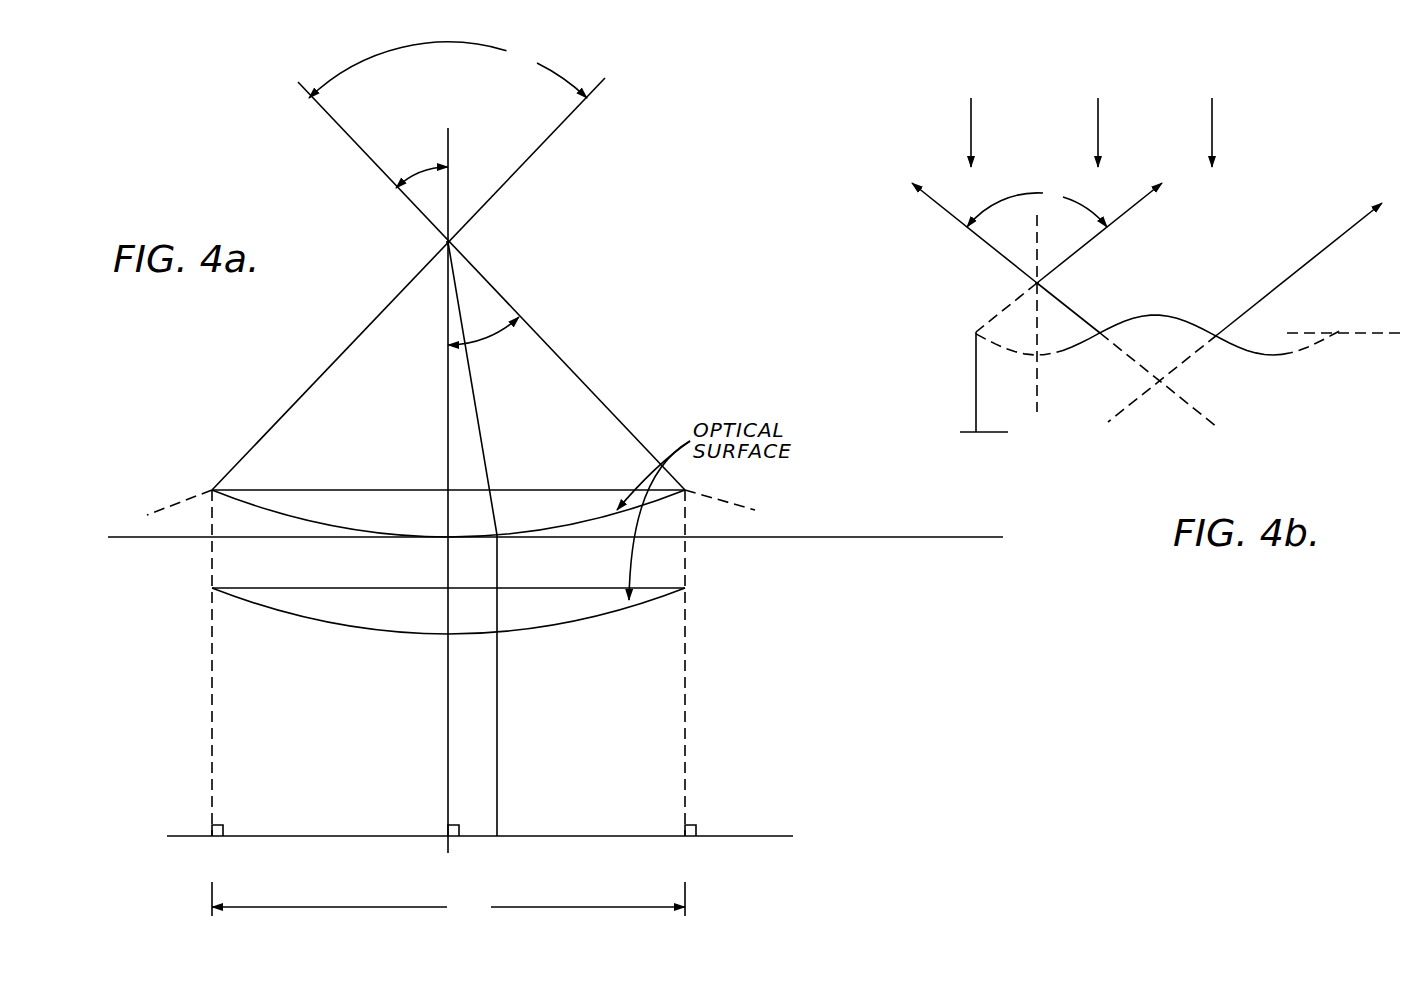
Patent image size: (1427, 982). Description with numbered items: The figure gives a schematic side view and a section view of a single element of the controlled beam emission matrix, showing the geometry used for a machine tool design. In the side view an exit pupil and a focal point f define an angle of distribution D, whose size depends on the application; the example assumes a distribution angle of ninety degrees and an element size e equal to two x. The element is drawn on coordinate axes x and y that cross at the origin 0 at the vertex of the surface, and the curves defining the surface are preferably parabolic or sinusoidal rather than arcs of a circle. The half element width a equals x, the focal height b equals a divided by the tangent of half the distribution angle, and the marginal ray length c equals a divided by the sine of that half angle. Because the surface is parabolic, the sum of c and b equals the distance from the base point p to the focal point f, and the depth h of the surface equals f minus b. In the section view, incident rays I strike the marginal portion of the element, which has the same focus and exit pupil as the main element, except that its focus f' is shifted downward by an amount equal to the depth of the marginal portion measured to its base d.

In FIG. 4A, the angle of distribution D is at (448, 70).
In FIG. 4B, the angle of distribution D is at (1037, 207).
In FIG. 4A, the y axis y is at (447, 474).
In FIG. 4A, the x axis x is at (564, 544).
In FIG. 4A, the origin 0 is at (458, 553).
In FIG. 4A, the focal point f is at (464, 241).
In FIG. 4B, the focal point f is at (1054, 283).
In FIG. 4B, the shifted focal point f' is at (1158, 380).
In FIG. 4A, the marginal ray length c is at (582, 384).
In FIG. 4B, the marginal ray length c is at (1000, 312).
In FIG. 4A, the focal height b is at (447, 430).
In FIG. 4A, the surface depth h is at (447, 513).
In FIG. 4B, the surface depth h is at (1037, 344).
In FIG. 4A, the half element width a is at (556, 493).
In FIG. 4A, the element size e is at (448, 902).
In FIG. 4A, the base point p is at (447, 838).
In FIG. 4B, the marginal portion base d is at (974, 428).
In FIG. 4B, the incident rays I is at (1090, 106).